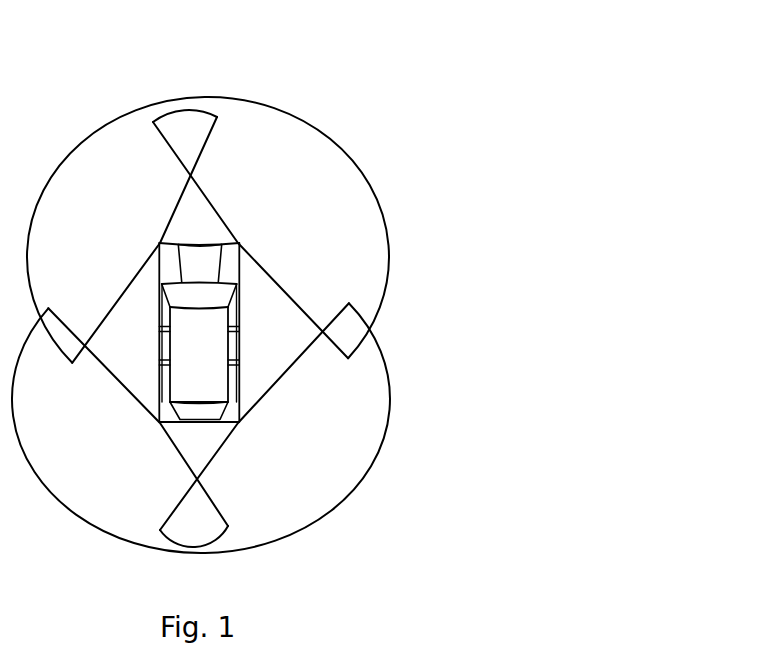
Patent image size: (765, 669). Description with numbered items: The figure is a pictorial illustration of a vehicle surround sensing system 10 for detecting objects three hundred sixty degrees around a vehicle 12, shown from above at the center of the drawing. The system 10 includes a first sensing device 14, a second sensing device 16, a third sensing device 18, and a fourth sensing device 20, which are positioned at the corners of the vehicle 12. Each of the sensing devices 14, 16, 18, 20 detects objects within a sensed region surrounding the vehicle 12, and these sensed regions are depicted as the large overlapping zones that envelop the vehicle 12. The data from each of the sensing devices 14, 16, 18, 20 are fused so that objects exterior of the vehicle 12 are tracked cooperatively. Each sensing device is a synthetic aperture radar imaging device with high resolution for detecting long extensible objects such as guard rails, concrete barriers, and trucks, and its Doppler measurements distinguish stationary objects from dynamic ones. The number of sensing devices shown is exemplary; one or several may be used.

The vehicle surround sensing system 10 is at (329, 128).
The vehicle 12 is at (239, 305).
The first sensing device 14 is at (160, 243).
The second sensing device 16 is at (238, 243).
The third sensing device 18 is at (160, 423).
The fourth sensing device 20 is at (238, 423).